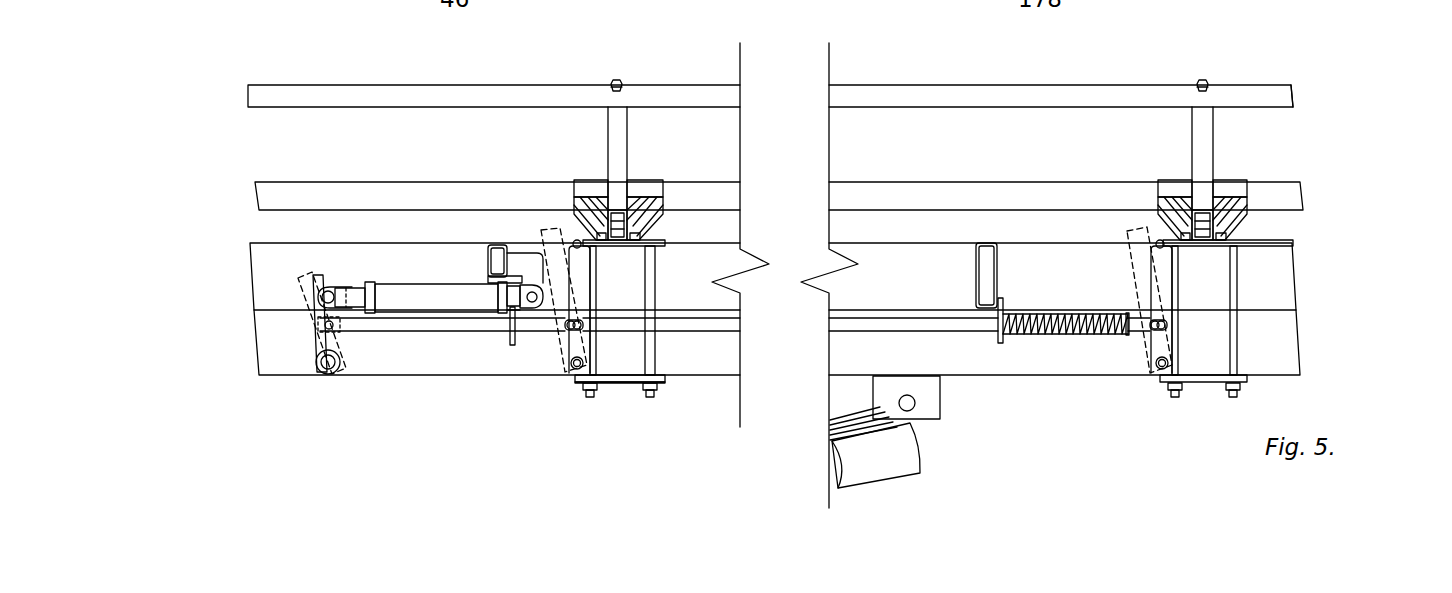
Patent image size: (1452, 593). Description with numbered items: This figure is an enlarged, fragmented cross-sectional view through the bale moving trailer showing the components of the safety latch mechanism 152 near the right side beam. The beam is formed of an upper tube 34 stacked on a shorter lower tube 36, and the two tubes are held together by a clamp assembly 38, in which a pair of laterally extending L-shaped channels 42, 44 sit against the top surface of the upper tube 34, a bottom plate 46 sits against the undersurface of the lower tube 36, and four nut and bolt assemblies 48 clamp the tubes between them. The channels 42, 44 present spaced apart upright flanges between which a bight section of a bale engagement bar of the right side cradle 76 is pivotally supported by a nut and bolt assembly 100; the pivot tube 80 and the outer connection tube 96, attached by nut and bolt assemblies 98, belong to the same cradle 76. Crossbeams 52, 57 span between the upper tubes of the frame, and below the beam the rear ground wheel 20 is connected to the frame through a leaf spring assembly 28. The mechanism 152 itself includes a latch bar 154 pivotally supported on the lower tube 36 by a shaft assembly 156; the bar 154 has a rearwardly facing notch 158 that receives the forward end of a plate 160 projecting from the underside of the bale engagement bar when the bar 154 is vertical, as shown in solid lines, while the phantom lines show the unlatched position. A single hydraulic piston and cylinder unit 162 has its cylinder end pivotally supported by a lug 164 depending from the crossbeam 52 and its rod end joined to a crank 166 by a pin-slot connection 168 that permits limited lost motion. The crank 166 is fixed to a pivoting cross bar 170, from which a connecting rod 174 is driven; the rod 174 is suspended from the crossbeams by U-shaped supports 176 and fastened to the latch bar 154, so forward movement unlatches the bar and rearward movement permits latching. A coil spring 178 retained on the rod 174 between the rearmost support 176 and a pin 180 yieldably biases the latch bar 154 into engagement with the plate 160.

The ground wheel 20 is at (902, 462).
The leaf spring assembly 28 is at (833, 425).
The upper tube 34 is at (1292, 302).
The lower tube 36 is at (1297, 348).
The clamp assembly 38 is at (656, 378).
The L-shaped channel 42 is at (594, 192).
The L-shaped channel 44 is at (640, 192).
The bottom plate 46 is at (620, 383).
The nut and bolt assembly 48 is at (588, 398).
The crossbeam 52 is at (488, 258).
The crossbeam 57 is at (998, 265).
The right side cradle 76 is at (1300, 76).
The pivot tube 80 is at (960, 185).
The connection tube 96 is at (1035, 88).
The nut and bolt assembly 98 is at (618, 83).
The nut and bolt assembly 100 is at (640, 225).
The safety latch mechanism 152 is at (357, 335).
The latch bar 154 is at (568, 350).
The shaft assembly 156 is at (570, 368).
The notch 158 is at (585, 250).
The plate 160 is at (628, 247).
The hydraulic piston and cylinder unit 162 is at (402, 300).
The lug 164 is at (525, 260).
The crank 166 is at (330, 285).
The pin-slot connection 168 is at (335, 295).
The pivoting cross bar 170 is at (322, 378).
The connecting rod 174 is at (876, 323).
The U-shaped support 176 is at (505, 345).
The coil spring 178 is at (1048, 336).
The pin 180 is at (1128, 333).